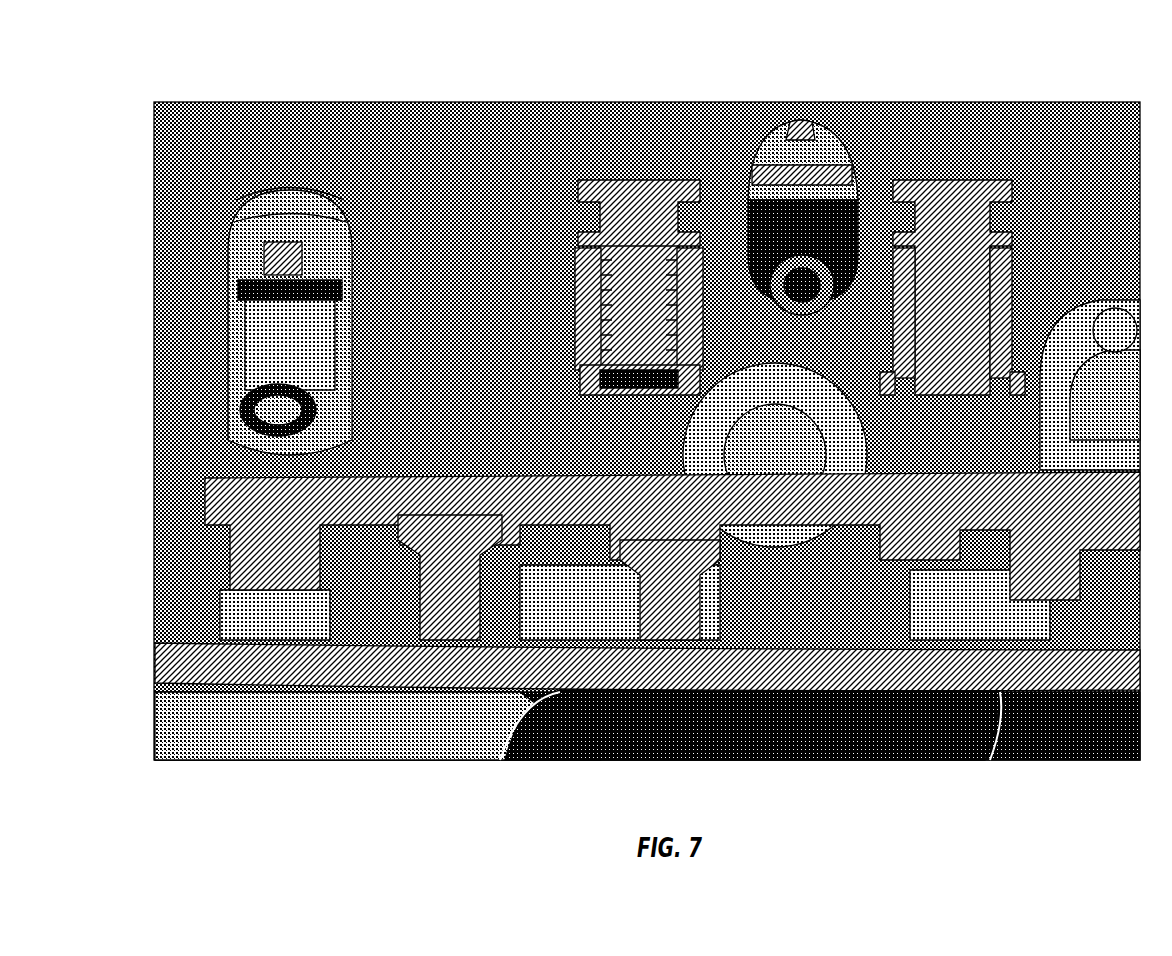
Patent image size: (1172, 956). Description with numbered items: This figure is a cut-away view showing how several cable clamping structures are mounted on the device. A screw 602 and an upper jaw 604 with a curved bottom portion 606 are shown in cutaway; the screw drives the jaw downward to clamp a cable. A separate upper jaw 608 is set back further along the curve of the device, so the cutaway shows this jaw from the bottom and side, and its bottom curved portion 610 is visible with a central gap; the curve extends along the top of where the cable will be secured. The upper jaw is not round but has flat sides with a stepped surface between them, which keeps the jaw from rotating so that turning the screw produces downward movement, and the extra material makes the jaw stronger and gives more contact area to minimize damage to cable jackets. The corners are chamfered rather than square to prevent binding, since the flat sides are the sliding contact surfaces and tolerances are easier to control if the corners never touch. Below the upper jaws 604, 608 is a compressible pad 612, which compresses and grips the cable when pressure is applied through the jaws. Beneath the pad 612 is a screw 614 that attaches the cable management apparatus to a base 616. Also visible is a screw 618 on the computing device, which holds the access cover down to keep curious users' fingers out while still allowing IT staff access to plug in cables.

The screw 602 is at (588, 186).
The upper jaw 604 is at (590, 302).
The curved bottom portion 606 is at (600, 390).
The upper jaw 608 is at (230, 362).
The bottom curved portion 610 is at (227, 425).
The compressible pad 612 is at (212, 492).
The screw 614 is at (445, 530).
The base 616 is at (183, 655).
The screw 618 is at (809, 128).